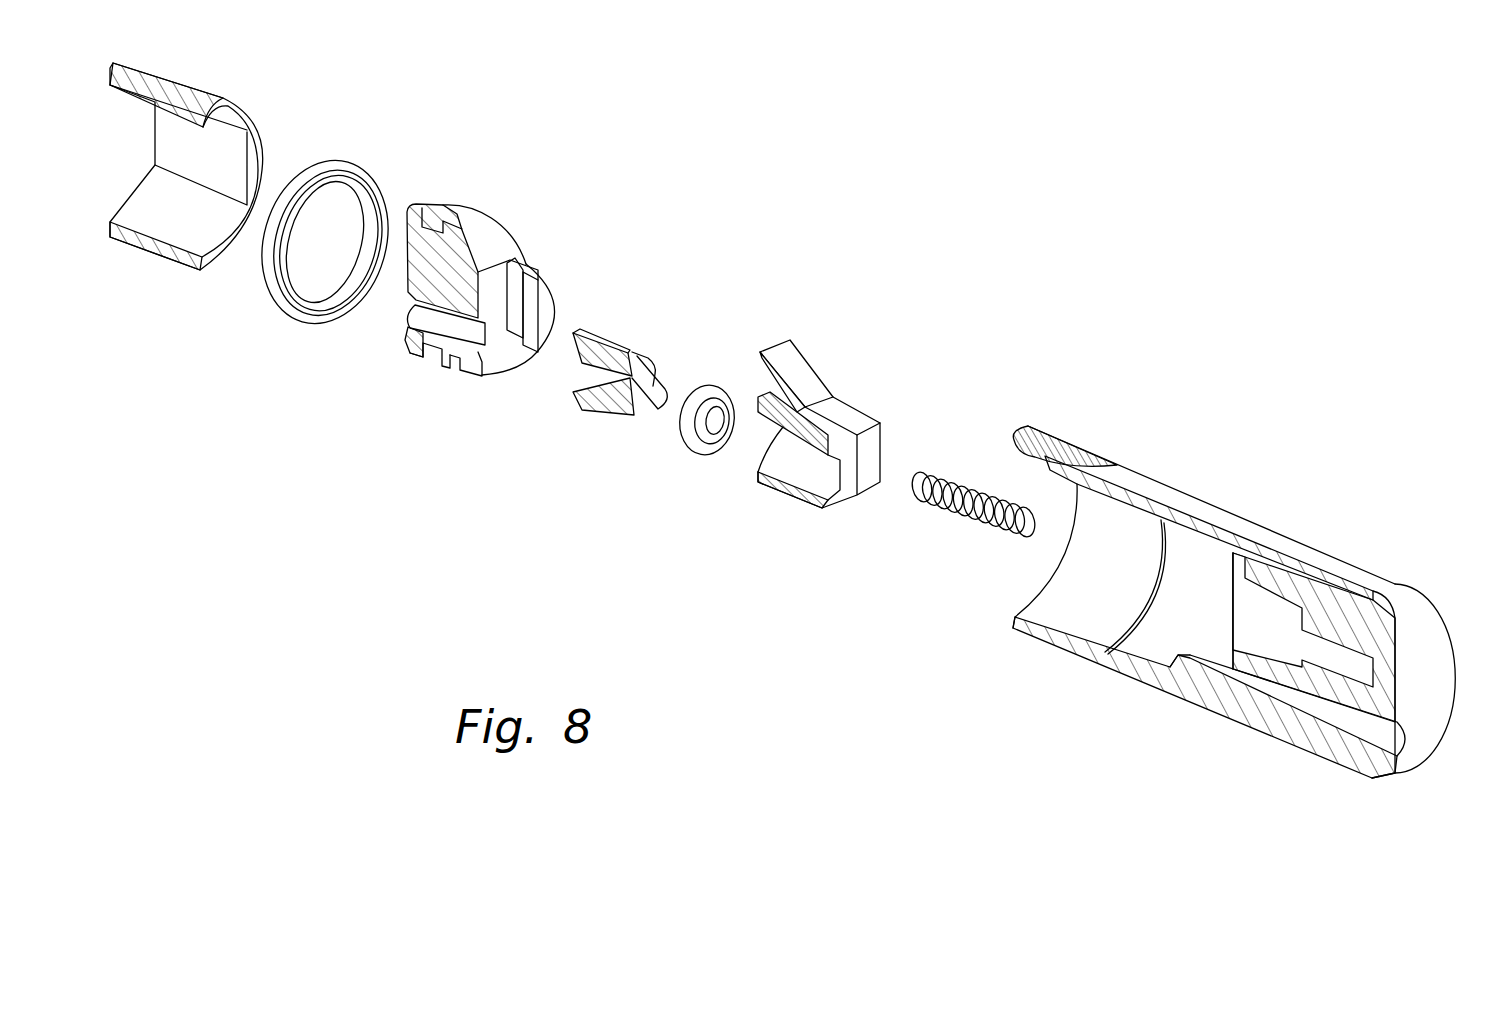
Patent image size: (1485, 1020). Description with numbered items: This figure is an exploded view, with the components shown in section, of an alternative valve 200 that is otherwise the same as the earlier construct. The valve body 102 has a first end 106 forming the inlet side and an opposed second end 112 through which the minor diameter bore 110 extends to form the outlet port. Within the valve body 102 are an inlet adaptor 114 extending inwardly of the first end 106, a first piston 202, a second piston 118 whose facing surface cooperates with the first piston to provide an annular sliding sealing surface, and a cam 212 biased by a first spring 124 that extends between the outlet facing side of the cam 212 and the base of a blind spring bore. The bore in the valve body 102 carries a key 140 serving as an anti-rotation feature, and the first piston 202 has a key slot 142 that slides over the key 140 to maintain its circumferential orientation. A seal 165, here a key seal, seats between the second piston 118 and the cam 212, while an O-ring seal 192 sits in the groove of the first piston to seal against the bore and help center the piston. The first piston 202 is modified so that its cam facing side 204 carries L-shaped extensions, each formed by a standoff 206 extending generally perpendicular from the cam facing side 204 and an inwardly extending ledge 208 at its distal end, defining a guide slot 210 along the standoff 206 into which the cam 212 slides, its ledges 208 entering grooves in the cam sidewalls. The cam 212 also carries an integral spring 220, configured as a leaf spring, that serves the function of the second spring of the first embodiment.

The valve body 102 is at (1218, 720).
The first end 106 is at (1017, 440).
The minor diameter bore 110 is at (1342, 718).
The second end 112 is at (1428, 720).
The inlet adaptor 114 is at (157, 258).
The second piston 118 is at (617, 417).
The first spring 124 is at (962, 513).
The key 140 is at (1188, 668).
The key slot 142 is at (468, 365).
The seal 165 is at (698, 453).
The seal 192 is at (310, 323).
The valve 200 is at (1182, 192).
The first piston 202 is at (417, 362).
The cam facing side 204 is at (498, 347).
The standoff 206 is at (537, 270).
The ledge 208 is at (532, 302).
The guide slot 210 is at (508, 260).
The cam 212 is at (793, 498).
The integral spring 220 is at (793, 362).